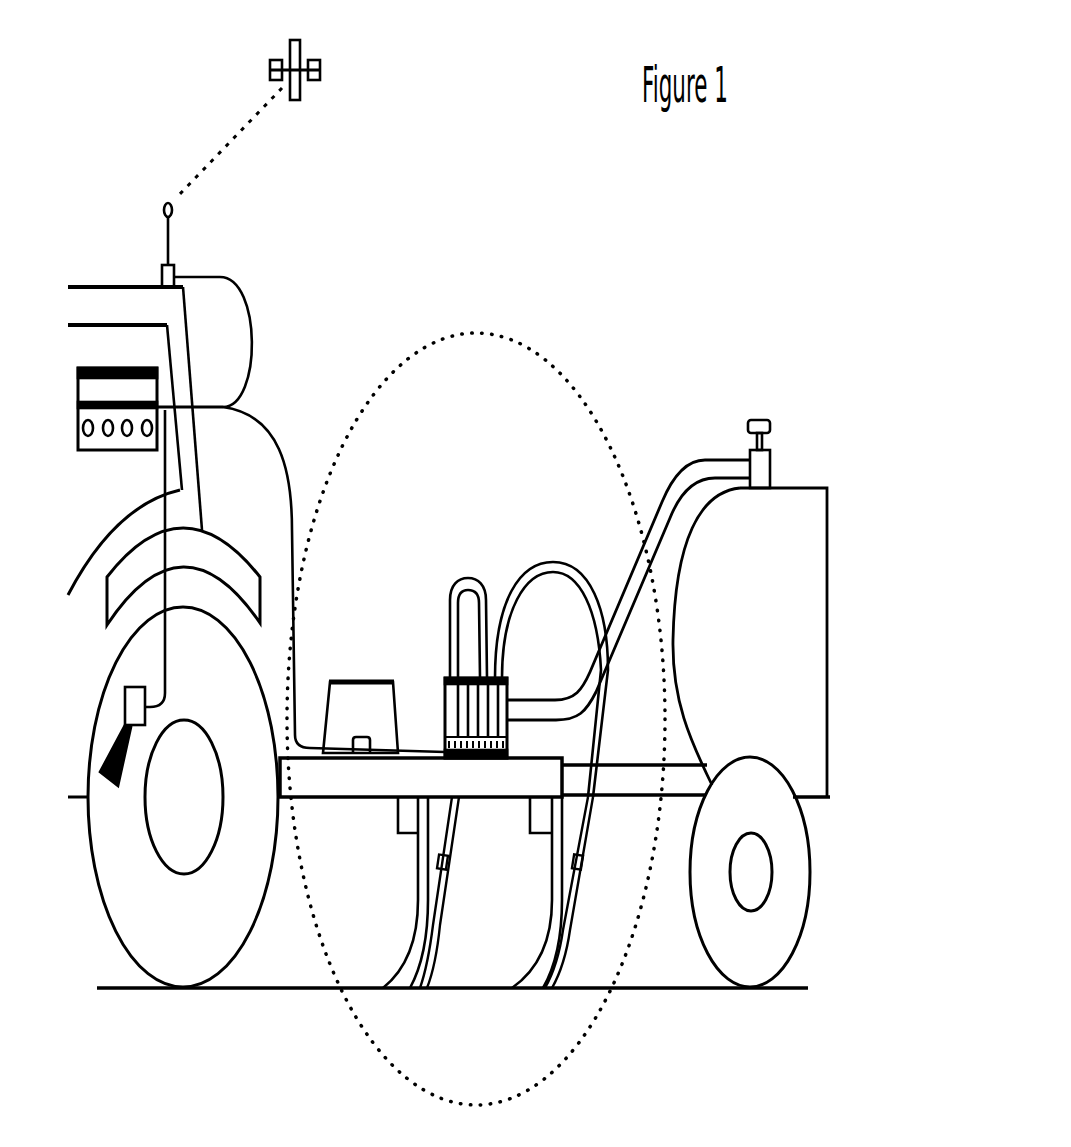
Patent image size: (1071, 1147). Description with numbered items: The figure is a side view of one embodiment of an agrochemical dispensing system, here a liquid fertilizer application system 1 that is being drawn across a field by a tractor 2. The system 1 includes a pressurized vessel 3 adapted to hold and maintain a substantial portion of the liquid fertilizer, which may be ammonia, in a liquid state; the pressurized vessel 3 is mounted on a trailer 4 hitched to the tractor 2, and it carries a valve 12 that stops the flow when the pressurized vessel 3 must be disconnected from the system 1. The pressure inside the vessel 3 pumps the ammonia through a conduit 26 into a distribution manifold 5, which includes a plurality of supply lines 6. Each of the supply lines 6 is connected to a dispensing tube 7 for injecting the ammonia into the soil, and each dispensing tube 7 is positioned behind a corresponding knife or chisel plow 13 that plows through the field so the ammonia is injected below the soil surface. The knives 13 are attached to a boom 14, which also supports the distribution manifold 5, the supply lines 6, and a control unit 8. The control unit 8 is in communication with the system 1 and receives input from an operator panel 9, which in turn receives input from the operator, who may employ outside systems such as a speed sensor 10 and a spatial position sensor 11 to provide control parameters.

The liquid fertilizer application system 1 is at (418, 357).
The tractor 2 is at (200, 490).
The pressurized vessel 3 is at (798, 485).
The trailer 4 is at (693, 907).
The distribution manifold 5 is at (480, 674).
The supply lines 6 is at (543, 563).
The dispensing tube 7 is at (430, 947).
The control unit 8 is at (348, 680).
The operator panel 9 is at (118, 368).
The speed sensor 10 is at (135, 727).
The spatial position sensor 11 is at (168, 203).
The valve 12 is at (757, 420).
The knife or chisel plow 13 is at (410, 965).
The boom 14 is at (402, 833).
The conduit 26 is at (673, 480).